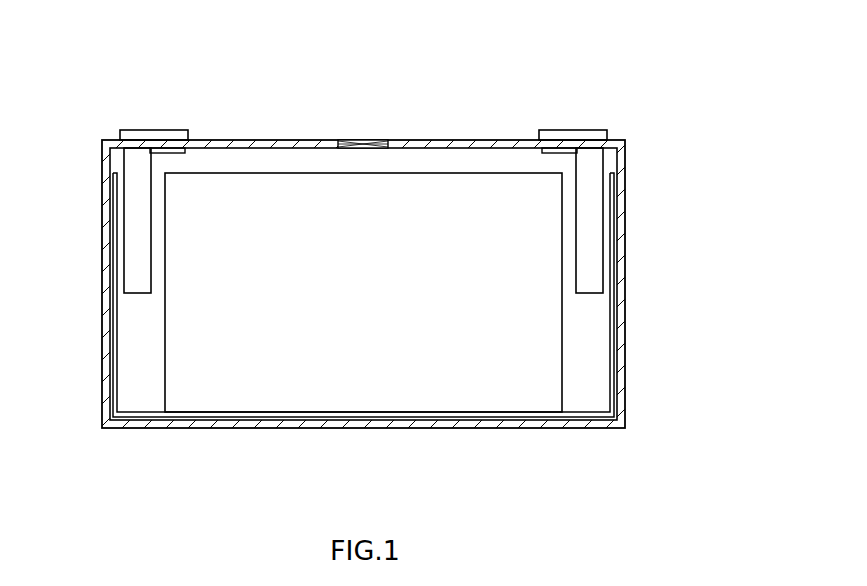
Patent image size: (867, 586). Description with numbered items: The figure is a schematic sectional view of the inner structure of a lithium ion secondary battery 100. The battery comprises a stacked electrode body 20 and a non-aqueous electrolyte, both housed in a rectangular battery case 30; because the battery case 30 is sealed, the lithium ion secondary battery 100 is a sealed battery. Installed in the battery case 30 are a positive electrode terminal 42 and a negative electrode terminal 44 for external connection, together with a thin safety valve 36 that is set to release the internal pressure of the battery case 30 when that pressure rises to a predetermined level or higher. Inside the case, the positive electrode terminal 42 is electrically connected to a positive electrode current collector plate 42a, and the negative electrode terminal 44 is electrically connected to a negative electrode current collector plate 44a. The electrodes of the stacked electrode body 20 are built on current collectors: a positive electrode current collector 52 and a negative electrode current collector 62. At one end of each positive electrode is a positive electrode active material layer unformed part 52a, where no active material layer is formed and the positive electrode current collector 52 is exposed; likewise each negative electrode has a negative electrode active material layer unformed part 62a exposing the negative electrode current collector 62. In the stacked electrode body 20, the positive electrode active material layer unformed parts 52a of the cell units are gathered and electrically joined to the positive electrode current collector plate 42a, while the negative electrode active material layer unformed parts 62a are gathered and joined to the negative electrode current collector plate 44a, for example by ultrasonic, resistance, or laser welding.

The lithium ion secondary battery 100 is at (371, 246).
The battery case 30 is at (626, 246).
The safety valve 36 is at (373, 140).
The stacked electrode body 20 is at (349, 360).
The positive electrode terminal 42 is at (178, 130).
The negative electrode terminal 44 is at (598, 130).
The positive electrode current collector plate 42a is at (138, 195).
The negative electrode current collector plate 44a is at (593, 187).
The positive electrode current collector 52 is at (113, 314).
The positive electrode active material layer unformed part 52a is at (130, 385).
The negative electrode current collector 62 is at (611, 316).
The negative electrode active material layer unformed part 62a is at (596, 383).